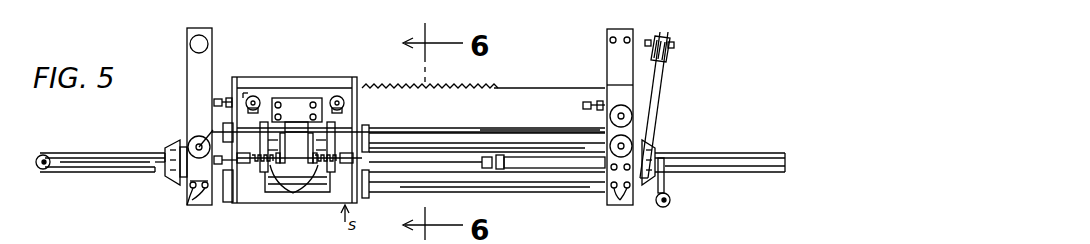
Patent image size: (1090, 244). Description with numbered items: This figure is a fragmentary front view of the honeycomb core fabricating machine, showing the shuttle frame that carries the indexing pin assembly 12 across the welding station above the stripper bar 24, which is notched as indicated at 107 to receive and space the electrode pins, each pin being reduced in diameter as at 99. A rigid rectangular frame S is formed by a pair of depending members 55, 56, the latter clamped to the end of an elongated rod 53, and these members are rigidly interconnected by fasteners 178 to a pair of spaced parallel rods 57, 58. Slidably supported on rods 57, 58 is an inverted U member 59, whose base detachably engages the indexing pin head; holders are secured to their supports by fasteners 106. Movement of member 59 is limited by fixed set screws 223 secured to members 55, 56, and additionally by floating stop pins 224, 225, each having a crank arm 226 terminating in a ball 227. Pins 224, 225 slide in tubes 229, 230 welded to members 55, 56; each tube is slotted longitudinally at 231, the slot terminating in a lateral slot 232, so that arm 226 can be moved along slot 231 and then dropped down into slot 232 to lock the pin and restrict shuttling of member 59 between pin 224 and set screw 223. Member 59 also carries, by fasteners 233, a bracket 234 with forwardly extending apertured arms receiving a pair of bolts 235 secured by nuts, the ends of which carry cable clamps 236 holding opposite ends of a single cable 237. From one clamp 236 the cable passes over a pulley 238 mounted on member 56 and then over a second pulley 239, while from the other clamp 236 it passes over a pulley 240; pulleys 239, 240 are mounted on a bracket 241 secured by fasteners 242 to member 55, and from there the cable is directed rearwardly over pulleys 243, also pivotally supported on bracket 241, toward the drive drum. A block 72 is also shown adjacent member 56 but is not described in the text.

The indexing pin assembly 12 is at (366, 73).
The stripper bar 24 is at (522, 92).
The elongated rod 53 is at (190, 48).
The depending member 55 is at (608, 205).
The depending member 56 is at (192, 89).
The rod 57 is at (522, 133).
The rod 58 is at (503, 192).
The inverted U member 59 is at (355, 108).
The bearing block 72 is at (226, 197).
The reduced diameter portion 99 is at (104, 90).
The fasteners 106 is at (345, 96).
The notches 107 is at (445, 86).
The fasteners 178 is at (196, 132).
The set screws 223 is at (224, 97).
The floating stop pin 224 is at (570, 168).
The floating stop pin 225 is at (103, 161).
The crank arm 226 is at (670, 183).
The ball 227 is at (38, 156).
The tube 229 is at (764, 153).
The tube 230 is at (72, 154).
The longitudinal slot 231 is at (85, 163).
The lateral slot 232 is at (155, 172).
The fasteners 233 is at (311, 108).
The bracket 234 is at (340, 128).
The bolts 235 is at (293, 190).
The cable clamps 236 is at (345, 200).
The cable 237 is at (240, 128).
The pulley 238 is at (183, 162).
The pulley 239 is at (627, 108).
The pulley 240 is at (628, 140).
The bracket 241 is at (608, 55).
The fasteners 242 is at (620, 32).
The pulleys 243 is at (655, 32).